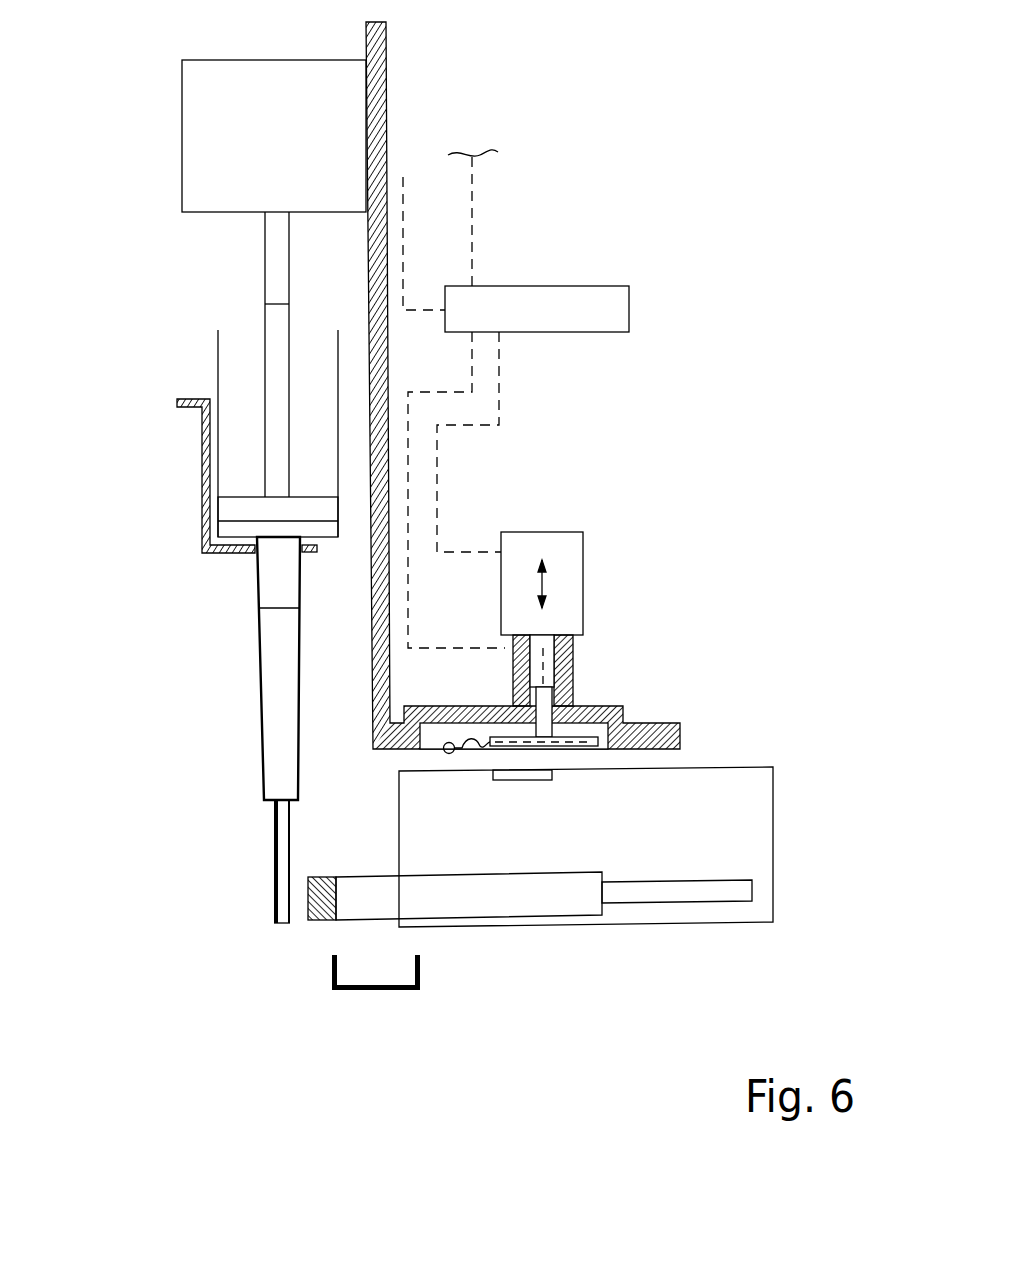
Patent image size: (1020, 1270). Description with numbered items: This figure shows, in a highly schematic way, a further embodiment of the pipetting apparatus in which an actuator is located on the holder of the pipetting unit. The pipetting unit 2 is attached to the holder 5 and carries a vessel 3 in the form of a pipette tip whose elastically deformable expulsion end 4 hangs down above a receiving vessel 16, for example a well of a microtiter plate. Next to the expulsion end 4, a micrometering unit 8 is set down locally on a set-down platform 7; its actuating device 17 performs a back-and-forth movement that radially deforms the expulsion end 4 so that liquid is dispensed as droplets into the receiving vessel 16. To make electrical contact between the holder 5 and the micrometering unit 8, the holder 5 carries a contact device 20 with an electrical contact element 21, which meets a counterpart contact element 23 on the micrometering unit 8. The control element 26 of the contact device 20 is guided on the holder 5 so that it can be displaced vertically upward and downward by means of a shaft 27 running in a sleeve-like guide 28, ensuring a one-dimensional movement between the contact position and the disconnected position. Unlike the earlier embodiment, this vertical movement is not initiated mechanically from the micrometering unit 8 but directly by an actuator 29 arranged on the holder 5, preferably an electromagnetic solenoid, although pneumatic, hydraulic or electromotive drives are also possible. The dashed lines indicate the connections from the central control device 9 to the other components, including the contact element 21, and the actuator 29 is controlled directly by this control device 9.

The pipetting unit 2 is at (170, 284).
The vessel 3 is at (260, 649).
The expulsion end 4 is at (273, 830).
The holder 5 is at (388, 88).
The set-down platform 7 is at (683, 893).
The micrometering unit 8 is at (773, 843).
The control device 9 is at (629, 310).
The receiving vessel 16 is at (333, 975).
The actuating device 17 is at (487, 897).
The contact device 20 is at (765, 692).
The contact element 21 is at (473, 748).
The counterpart contact element 23 is at (545, 775).
The control element 26 is at (578, 740).
The shaft 27 is at (547, 700).
The sleeve-like guide 28 is at (548, 656).
The actuator 29 is at (583, 550).